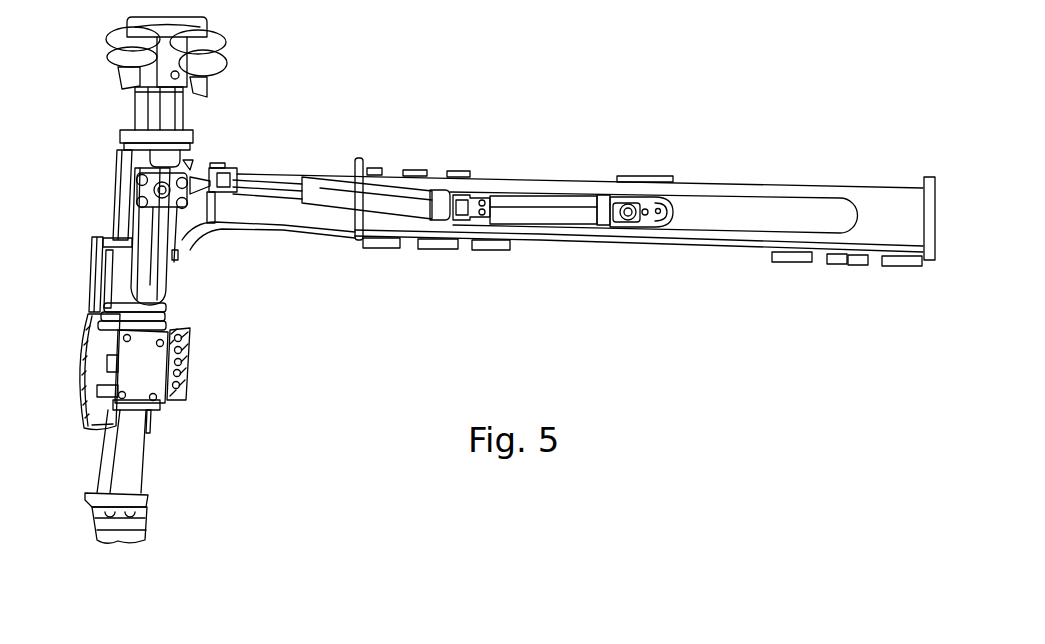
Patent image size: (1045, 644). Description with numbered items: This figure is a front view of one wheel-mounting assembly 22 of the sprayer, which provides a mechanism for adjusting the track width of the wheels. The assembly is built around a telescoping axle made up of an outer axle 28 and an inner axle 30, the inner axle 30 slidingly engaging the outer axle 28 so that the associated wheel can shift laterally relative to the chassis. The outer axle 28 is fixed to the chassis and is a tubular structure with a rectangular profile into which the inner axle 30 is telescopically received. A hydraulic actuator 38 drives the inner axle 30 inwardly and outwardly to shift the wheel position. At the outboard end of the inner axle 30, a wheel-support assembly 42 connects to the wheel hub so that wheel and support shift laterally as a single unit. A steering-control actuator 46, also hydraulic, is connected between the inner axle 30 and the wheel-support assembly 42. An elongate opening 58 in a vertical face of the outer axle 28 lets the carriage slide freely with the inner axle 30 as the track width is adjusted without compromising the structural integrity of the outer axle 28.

The wheel-mounting assembly 22 is at (323, 122).
The outer axle 28 is at (546, 176).
The inner axle 30 is at (280, 229).
The hydraulic actuator 38 is at (565, 215).
The wheel-support assembly 42 is at (117, 180).
The steering-control actuator 46 is at (383, 198).
The opening 58 is at (587, 195).